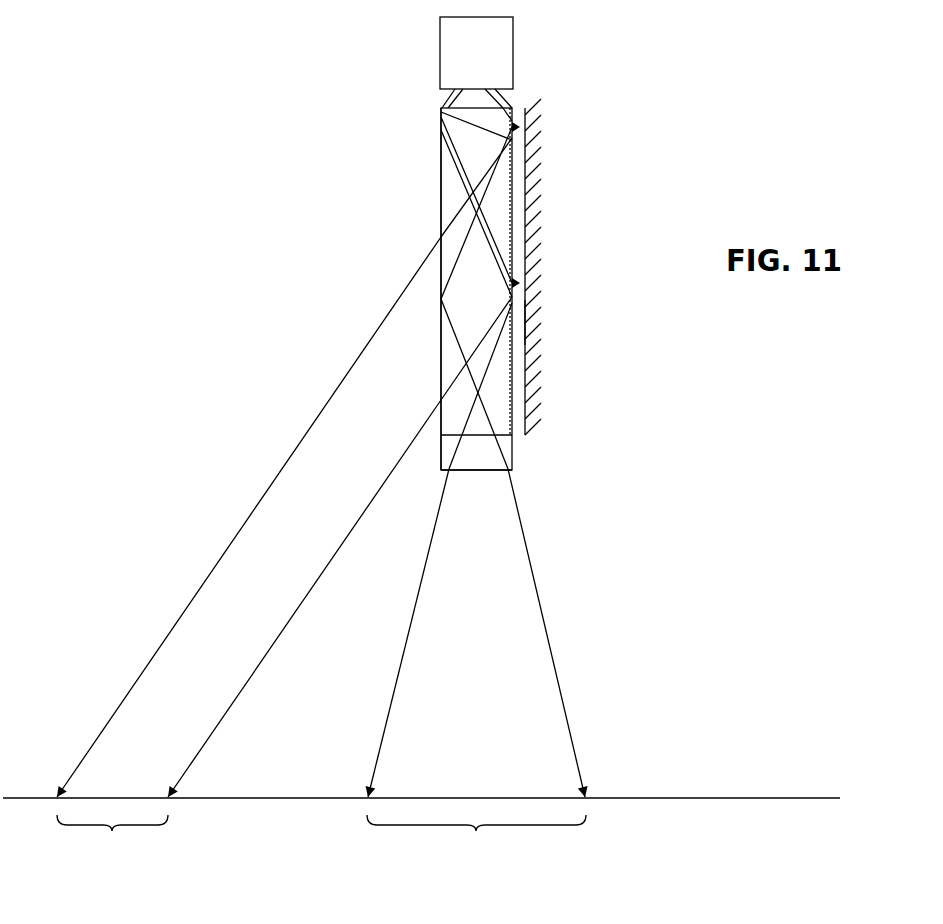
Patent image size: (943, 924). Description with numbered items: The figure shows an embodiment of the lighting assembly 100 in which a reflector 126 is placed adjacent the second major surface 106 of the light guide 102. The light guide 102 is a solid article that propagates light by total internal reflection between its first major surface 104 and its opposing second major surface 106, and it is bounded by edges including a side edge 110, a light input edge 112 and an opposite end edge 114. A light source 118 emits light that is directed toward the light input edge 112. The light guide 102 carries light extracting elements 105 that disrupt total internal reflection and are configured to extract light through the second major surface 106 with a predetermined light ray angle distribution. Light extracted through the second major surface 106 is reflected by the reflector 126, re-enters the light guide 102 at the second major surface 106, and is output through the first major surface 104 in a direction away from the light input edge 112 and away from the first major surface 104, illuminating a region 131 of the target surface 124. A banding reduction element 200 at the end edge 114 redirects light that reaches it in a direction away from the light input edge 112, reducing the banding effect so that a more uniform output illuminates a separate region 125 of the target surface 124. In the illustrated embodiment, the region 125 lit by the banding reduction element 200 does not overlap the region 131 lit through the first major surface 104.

The lighting assembly 100 is at (270, 83).
The light guide 102 is at (505, 242).
The first major surface 104 is at (440, 208).
The light extracting elements 105 is at (525, 182).
The second major surface 106 is at (514, 217).
The side edge 110 is at (502, 398).
The light input edge 112 is at (442, 106).
The end edge 114 is at (500, 437).
The light source 118 is at (515, 55).
The target surface 124 is at (707, 798).
The region of the target surface illuminated by the banding reduction element 125 is at (476, 842).
The reflector 126 is at (525, 323).
The region of the target surface illuminated through the first major surface 131 is at (284, 502).
The banding reduction element 200 is at (457, 470).